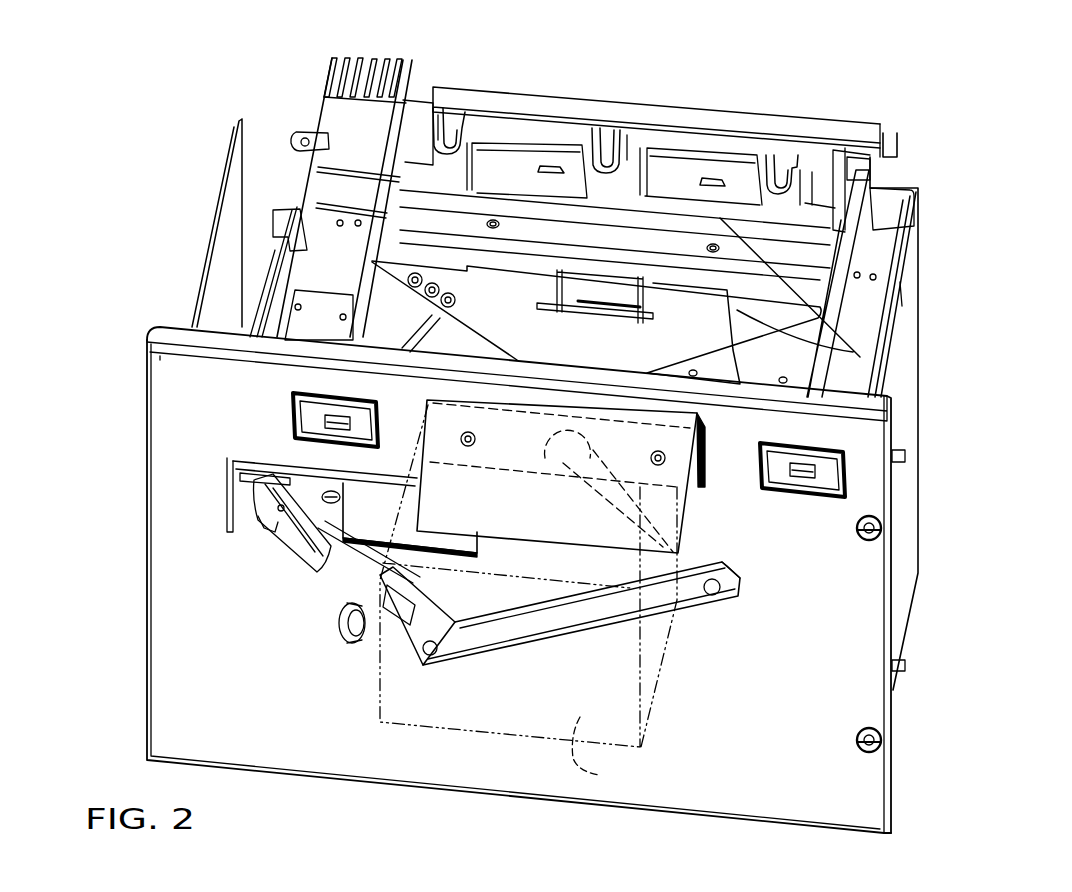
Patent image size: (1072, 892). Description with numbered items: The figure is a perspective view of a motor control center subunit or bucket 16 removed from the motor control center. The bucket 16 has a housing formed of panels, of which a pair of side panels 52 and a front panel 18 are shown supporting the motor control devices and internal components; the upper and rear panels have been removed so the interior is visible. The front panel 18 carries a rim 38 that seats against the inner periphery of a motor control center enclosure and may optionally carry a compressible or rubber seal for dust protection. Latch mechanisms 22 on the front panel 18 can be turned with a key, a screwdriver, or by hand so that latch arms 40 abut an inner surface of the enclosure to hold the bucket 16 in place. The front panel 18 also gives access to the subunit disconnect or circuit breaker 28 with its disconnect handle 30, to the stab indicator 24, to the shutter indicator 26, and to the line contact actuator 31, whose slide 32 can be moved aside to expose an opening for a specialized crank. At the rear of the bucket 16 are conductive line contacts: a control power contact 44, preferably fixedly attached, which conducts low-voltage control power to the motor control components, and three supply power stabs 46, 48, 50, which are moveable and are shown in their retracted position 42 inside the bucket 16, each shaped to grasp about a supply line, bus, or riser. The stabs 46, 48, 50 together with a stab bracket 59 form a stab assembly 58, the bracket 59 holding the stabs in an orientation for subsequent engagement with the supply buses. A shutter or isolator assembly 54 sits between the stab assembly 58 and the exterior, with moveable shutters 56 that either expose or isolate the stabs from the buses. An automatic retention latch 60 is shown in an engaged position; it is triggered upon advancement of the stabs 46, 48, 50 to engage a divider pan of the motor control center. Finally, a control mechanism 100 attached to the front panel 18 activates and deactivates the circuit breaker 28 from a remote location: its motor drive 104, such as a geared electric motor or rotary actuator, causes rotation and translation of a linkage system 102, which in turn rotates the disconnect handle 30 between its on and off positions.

The bucket 16 is at (992, 347).
The front panel 18 is at (780, 743).
The latch mechanisms 22 is at (873, 543).
The stab indicator 24 is at (310, 417).
The shutter indicator 26 is at (827, 477).
The subunit disconnect 28 is at (397, 478).
The subunit disconnect handle 30 is at (297, 550).
The line contact actuator 31 is at (558, 558).
The slide 32 is at (707, 457).
The rim 38 is at (557, 514).
The latch arms 40 is at (903, 450).
The retracted position 42 is at (640, 159).
The control power contact 44 is at (417, 50).
The supply power stab 46 is at (460, 160).
The supply power stab 48 is at (630, 177).
The supply power stab 50 is at (800, 187).
The side panels 52 is at (225, 188).
The isolator assembly 54 is at (580, 131).
The moveable shutters 56 is at (550, 165).
The stab assembly 58 is at (830, 253).
The stab bracket 59 is at (862, 352).
The automatic retention latch 60 is at (653, 291).
The control mechanism 100 is at (606, 777).
The linkage system 102 is at (712, 626).
The motor drive 104 is at (569, 450).